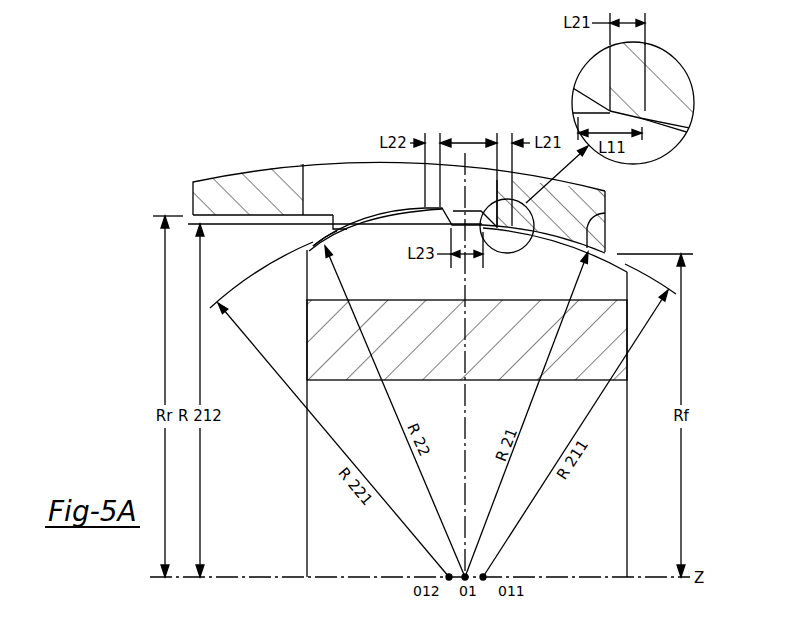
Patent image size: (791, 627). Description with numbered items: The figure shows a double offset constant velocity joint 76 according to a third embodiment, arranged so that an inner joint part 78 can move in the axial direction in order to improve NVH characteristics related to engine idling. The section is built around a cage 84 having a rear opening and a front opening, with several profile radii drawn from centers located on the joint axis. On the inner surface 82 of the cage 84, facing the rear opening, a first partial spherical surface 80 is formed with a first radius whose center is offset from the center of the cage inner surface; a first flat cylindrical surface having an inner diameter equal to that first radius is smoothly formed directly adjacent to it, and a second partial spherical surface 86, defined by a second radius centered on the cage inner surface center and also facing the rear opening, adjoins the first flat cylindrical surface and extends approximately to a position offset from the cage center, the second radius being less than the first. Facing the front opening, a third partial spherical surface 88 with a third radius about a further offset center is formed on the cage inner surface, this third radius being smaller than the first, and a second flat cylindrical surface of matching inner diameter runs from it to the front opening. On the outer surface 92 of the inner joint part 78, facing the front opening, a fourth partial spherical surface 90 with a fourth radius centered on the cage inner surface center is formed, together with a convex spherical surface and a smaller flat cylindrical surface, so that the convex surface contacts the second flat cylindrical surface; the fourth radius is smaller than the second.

The double offset constant velocity joint 76 is at (150, 270).
The inner joint part 78 is at (322, 319).
The first partial spherical surface 80 is at (360, 222).
The inner surface 82 is at (393, 210).
The cage 84 is at (248, 175).
The second partial spherical surface 86 is at (343, 238).
The third partial spherical surface 88 is at (605, 213).
The fourth partial spherical surface 90 is at (556, 242).
The outer surface 92 is at (615, 259).